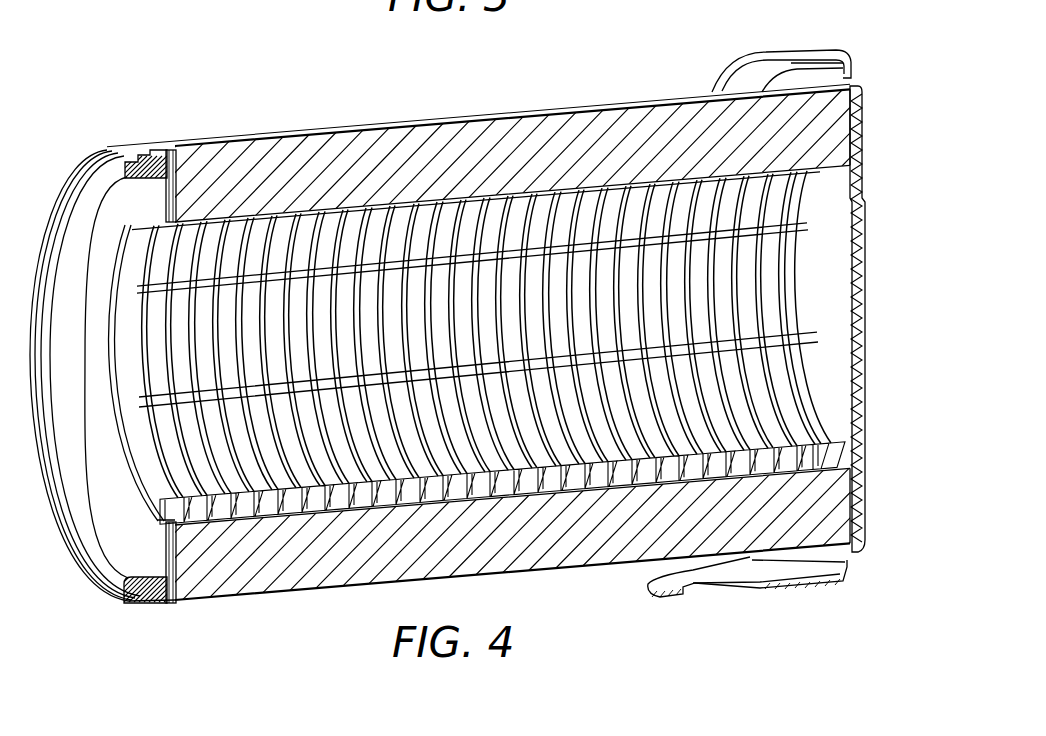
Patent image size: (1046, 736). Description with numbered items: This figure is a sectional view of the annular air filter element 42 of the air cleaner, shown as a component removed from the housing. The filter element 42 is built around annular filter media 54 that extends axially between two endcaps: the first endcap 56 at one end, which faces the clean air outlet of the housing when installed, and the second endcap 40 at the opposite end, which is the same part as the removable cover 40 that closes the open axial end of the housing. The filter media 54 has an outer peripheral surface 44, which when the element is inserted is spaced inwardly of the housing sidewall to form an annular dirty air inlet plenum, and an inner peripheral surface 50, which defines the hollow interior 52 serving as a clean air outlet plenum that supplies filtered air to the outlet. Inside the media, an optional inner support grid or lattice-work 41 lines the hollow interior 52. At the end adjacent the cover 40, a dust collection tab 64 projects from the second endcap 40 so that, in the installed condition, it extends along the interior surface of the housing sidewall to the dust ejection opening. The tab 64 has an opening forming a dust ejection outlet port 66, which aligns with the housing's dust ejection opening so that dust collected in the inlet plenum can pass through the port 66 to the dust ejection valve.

The cover 40 is at (803, 50).
The inner support grid or lattice-work 41 is at (253, 443).
The annular air filter element 42 is at (684, 93).
The outer peripheral surface 44 is at (580, 102).
The inner peripheral surface 50 is at (390, 215).
The hollow interior 52 is at (511, 343).
The annular filter media 54 is at (630, 143).
The first endcap 56 is at (92, 173).
The dust collection tab 64 is at (625, 601).
The dust ejection outlet port 66 is at (716, 590).